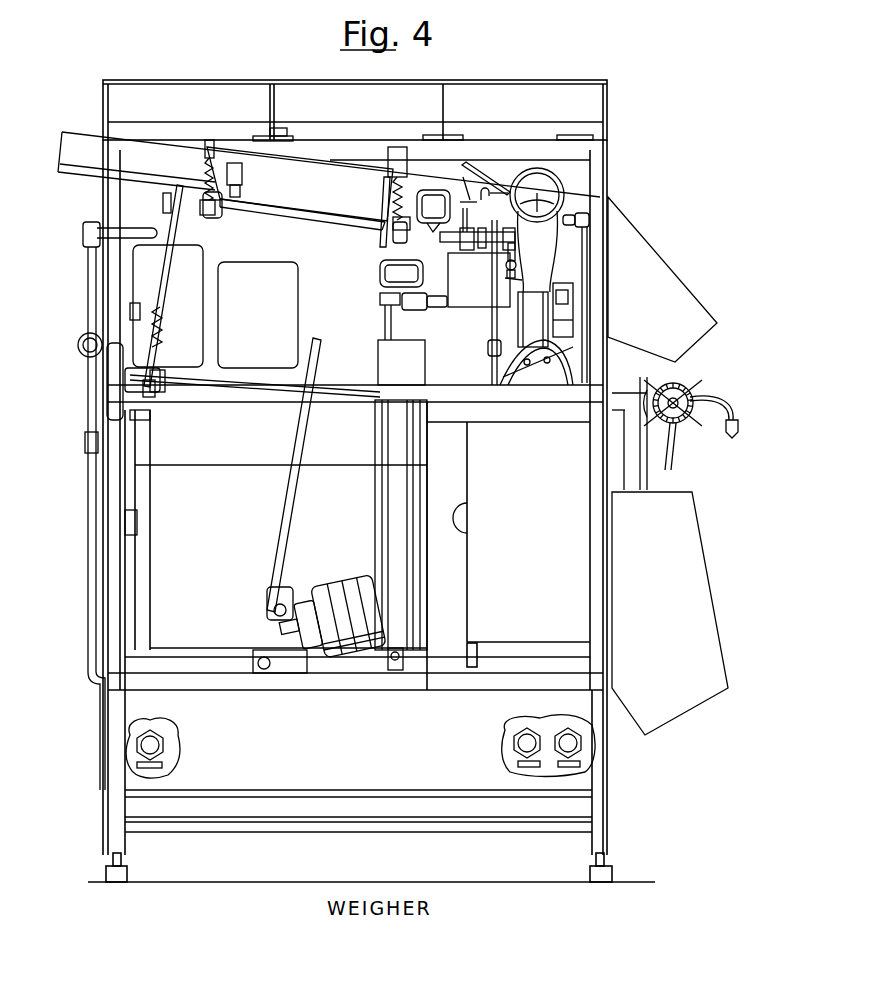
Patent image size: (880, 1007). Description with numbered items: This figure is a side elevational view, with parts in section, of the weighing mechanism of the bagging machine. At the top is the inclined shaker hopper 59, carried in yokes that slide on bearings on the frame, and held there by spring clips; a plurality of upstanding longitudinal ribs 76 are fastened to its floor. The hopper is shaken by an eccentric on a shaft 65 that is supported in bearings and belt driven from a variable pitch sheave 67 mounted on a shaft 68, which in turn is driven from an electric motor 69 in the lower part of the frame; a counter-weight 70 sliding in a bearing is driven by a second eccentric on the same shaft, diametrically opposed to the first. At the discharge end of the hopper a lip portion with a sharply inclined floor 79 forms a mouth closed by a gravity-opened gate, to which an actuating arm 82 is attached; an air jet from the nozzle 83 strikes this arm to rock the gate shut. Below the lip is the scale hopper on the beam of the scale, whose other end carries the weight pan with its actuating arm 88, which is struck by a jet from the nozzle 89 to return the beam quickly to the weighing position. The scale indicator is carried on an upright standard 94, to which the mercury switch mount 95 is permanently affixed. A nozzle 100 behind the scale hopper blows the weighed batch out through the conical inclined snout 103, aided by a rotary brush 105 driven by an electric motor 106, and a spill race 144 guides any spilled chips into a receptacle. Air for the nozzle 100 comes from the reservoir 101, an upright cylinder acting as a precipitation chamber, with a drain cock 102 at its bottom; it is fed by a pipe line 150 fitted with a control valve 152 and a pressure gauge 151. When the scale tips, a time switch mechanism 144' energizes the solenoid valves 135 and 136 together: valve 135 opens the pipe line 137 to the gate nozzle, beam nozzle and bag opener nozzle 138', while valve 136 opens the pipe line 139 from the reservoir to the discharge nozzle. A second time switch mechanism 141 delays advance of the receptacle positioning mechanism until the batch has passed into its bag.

The shaker hopper 59 is at (75, 145).
The shaft 65 is at (320, 218).
The variable pitch sheave 67 is at (150, 405).
The shaft 68 is at (210, 378).
The electric motor 69 is at (342, 595).
The counter-weight 70 is at (242, 178).
The upstanding longitudinal ribs 76 is at (472, 168).
The sharply inclined floor 79 is at (498, 299).
The actuating arm 82 is at (466, 172).
The nozzle 83 is at (477, 227).
The actuating arm 88 is at (510, 279).
The nozzle 89 is at (510, 253).
The upright standard 94 is at (585, 262).
The mercury switch mount 95 is at (536, 334).
The nozzle 100 is at (437, 307).
The reservoir 101 is at (425, 358).
The drain cock 102 is at (404, 656).
The inclined snout 103 is at (640, 258).
The rotary brush 105 is at (692, 392).
The electric motor 106 is at (678, 435).
The solenoid valve 135 is at (445, 190).
The solenoid valve 136 is at (382, 284).
The pipe line 137 is at (118, 245).
The bag opener nozzle 138' is at (734, 413).
The pipe line 139 is at (385, 325).
The time switch mechanism 141 is at (290, 300).
The spill race 144 is at (684, 613).
The time switch mechanism 144' is at (121, 306).
The pipe line 150 is at (88, 292).
The pressure gauge 151 is at (88, 420).
The control valve 152 is at (78, 348).